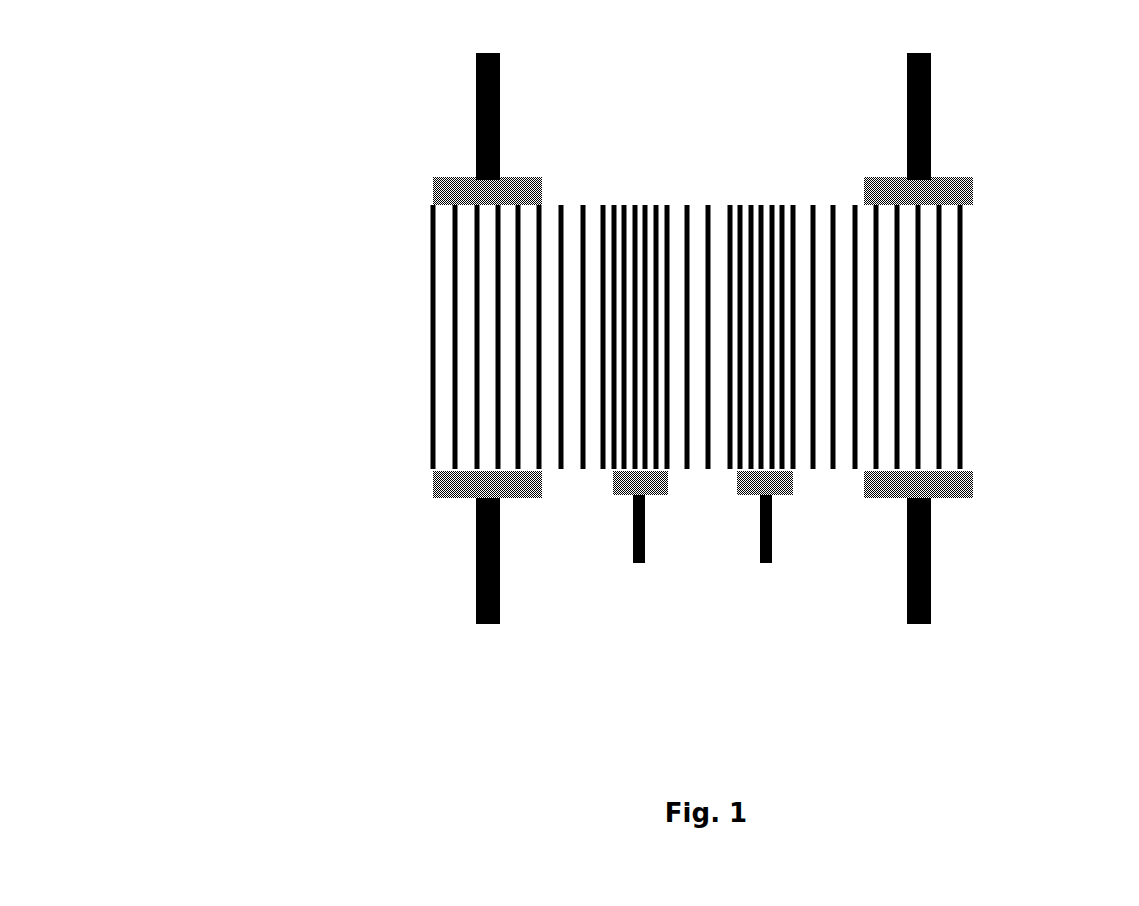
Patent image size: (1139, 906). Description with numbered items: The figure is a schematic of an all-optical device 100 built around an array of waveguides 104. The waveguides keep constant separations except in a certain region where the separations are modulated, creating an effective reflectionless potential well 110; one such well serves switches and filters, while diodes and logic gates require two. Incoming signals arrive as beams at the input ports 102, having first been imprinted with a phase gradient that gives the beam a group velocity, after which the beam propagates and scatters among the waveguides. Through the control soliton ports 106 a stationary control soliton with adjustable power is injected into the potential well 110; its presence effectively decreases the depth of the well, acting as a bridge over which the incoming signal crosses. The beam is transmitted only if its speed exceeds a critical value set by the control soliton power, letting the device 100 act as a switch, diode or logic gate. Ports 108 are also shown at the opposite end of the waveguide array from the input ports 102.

The all-optical device 100 is at (383, 130).
The input ports 102 is at (920, 624).
The array of waveguides 104 is at (467, 320).
The control soliton ports 106 is at (703, 549).
The source/drain contact 108 is at (907, 115).
The potential well 110 is at (698, 294).